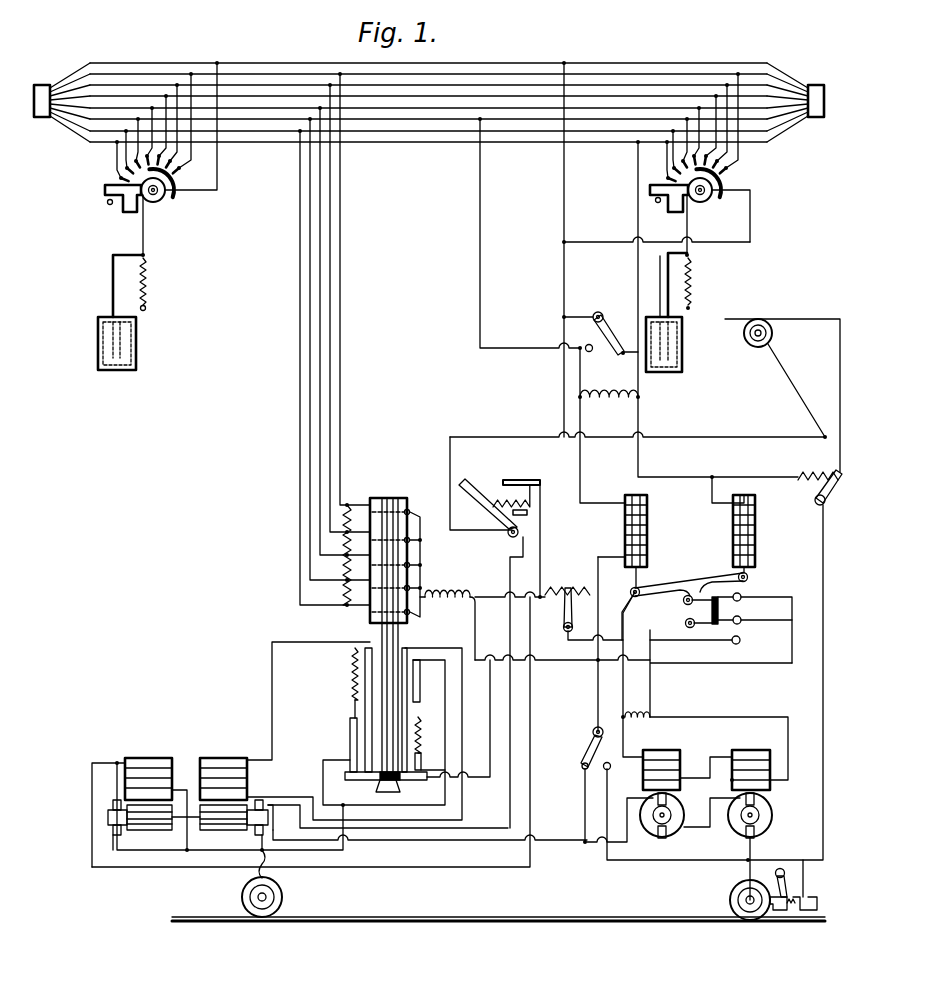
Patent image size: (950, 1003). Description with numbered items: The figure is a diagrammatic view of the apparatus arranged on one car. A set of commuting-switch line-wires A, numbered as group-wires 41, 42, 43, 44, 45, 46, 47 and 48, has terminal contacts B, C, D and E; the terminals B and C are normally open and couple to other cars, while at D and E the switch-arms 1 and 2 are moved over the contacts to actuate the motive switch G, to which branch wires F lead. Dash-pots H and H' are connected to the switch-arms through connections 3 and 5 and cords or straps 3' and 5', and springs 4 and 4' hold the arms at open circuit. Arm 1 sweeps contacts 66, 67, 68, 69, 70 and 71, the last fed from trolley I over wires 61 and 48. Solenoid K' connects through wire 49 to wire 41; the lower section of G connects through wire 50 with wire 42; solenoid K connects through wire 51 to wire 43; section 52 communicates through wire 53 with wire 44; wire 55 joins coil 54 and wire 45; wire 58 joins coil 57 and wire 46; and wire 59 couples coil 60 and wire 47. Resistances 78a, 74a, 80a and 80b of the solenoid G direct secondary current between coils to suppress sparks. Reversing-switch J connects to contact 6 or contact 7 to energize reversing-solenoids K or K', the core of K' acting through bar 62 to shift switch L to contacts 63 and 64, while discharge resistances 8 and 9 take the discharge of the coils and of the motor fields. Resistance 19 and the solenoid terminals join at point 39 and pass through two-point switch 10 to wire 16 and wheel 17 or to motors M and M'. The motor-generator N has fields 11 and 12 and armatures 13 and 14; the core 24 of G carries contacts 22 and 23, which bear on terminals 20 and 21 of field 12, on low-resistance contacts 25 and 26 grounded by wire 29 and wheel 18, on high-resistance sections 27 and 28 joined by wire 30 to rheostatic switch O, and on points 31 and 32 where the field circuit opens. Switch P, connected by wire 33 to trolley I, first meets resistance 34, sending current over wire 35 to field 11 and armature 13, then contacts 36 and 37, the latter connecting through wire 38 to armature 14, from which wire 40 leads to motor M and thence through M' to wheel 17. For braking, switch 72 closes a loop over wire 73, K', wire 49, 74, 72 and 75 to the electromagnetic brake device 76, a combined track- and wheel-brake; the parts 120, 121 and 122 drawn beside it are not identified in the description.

The switch-arm 1 is at (127, 212).
The switch-arm 2 is at (670, 212).
The dash-pot connection 3 is at (119, 286).
The cord or strap 3' is at (663, 285).
The spring 4 is at (151, 284).
The spring 4' is at (698, 284).
The dash-pot connection 5 is at (153, 226).
The cord or strap 5' is at (694, 226).
The contact 6 is at (588, 360).
The contact 7 is at (625, 363).
The discharge resistance 8 is at (609, 425).
The discharge resistance 9 is at (632, 726).
The two-point switch 10 is at (588, 740).
The motor field 11 is at (156, 795).
The generator-field 12 is at (223, 770).
The motor armature 13 is at (140, 825).
The generator armature 14 is at (222, 825).
The wire 16 is at (584, 800).
The car-wheel 17 is at (730, 894).
The car-wheel 18 is at (292, 888).
The resistance 19 is at (445, 608).
The generator-field terminal 20 is at (362, 644).
The generator-field terminal 21 is at (408, 650).
The motive-switch contact 22 is at (365, 781).
The motive-switch contact 23 is at (405, 785).
The core 24 is at (380, 640).
The low-resistance contact 25 is at (348, 733).
The low-resistance contact 26 is at (421, 690).
The high-resistance contact-section 27 is at (345, 667).
The high-resistance contact-section 28 is at (422, 740).
The wire 29 is at (345, 853).
The wire 30 is at (463, 732).
The point 31 is at (352, 706).
The point 32 is at (420, 710).
The wire 33 is at (540, 430).
The resistance 34 is at (495, 498).
The wire 35 is at (548, 770).
The contact 36 is at (532, 478).
The contact 37 is at (527, 512).
The wire 38 is at (507, 596).
The point 39 is at (590, 670).
The conducting-wire 40 is at (498, 840).
The group-wire 41 is at (428, 148).
The group-wire 42 is at (428, 136).
The group-wire 43 is at (428, 125).
The group-wire 44 is at (428, 114).
The group-wire 45 is at (428, 102).
The group-wire 46 is at (428, 91).
The group-wire 47 is at (428, 80).
The group-wire 48 is at (428, 69).
The wire 49 is at (717, 321).
The wire 50 is at (300, 532).
The wire 51 is at (530, 233).
The solenoid section 52 is at (410, 585).
The wire 53 is at (310, 513).
The coil 54 is at (422, 565).
The wire 55 is at (320, 483).
The coil 57 is at (410, 540).
The wire 58 is at (330, 466).
The wire 59 is at (340, 446).
The coil 60 is at (412, 510).
The wire 61 is at (644, 249).
The bar 62 is at (680, 580).
The contact 63 is at (755, 622).
The contact 64 is at (742, 630).
The contact 66 is at (118, 181).
The contact 67 is at (124, 168).
The contact 68 is at (134, 160).
The contact 69 is at (172, 160).
The contact 70 is at (180, 170).
The contact 71 is at (176, 190).
The adjusting-switch 72 is at (812, 497).
The wire 73 is at (704, 663).
The brake-circuit connection 74 is at (745, 477).
The resistance 74a is at (342, 546).
The conductor 75 is at (823, 690).
The electromagnetic brake device 76 is at (815, 896).
The resistance 78a is at (342, 520).
The resistance 80a is at (342, 570).
The resistance 80b is at (342, 592).
The lever 120 is at (786, 858).
The contact block 121 is at (778, 912).
The rail 122 is at (808, 928).
The commuting-switch line-wires A is at (429, 117).
The terminal contacts B is at (42, 118).
The terminal contacts C is at (817, 116).
The terminal contacts D is at (180, 139).
The terminal contacts E is at (722, 198).
The branch wires F is at (306, 338).
The motive switch G is at (388, 549).
The dash-pot H is at (103, 343).
The dash-pot H' is at (678, 344).
The trolley I is at (770, 362).
The reversing-switch J is at (604, 312).
The reversing-solenoid K is at (633, 546).
The reversing-solenoid K' is at (757, 538).
The reversing switch L is at (752, 605).
The motor M is at (690, 804).
The motor M' is at (763, 825).
The motor-generator N is at (143, 826).
The rheostatic switch O is at (590, 597).
The distributing switch P is at (486, 632).